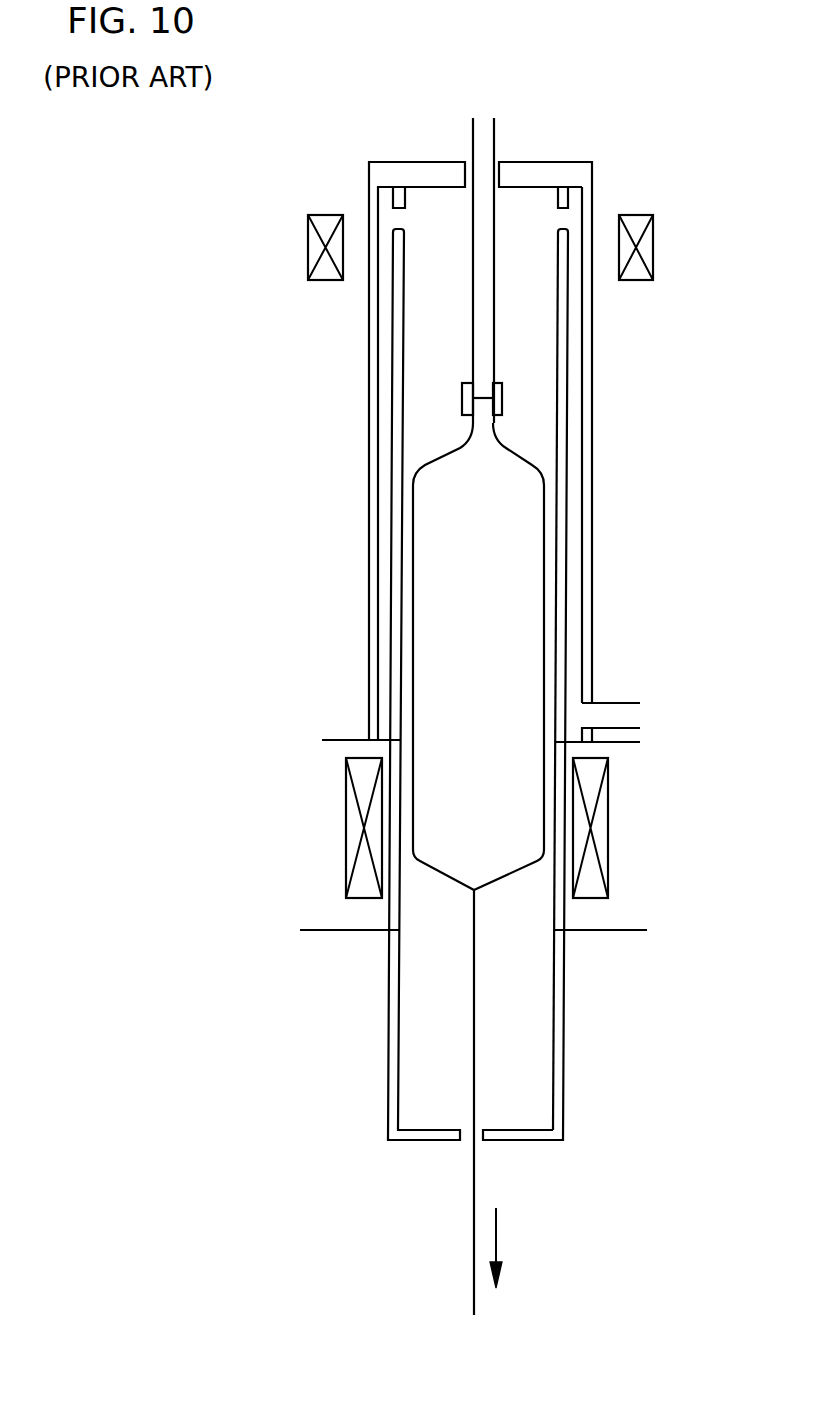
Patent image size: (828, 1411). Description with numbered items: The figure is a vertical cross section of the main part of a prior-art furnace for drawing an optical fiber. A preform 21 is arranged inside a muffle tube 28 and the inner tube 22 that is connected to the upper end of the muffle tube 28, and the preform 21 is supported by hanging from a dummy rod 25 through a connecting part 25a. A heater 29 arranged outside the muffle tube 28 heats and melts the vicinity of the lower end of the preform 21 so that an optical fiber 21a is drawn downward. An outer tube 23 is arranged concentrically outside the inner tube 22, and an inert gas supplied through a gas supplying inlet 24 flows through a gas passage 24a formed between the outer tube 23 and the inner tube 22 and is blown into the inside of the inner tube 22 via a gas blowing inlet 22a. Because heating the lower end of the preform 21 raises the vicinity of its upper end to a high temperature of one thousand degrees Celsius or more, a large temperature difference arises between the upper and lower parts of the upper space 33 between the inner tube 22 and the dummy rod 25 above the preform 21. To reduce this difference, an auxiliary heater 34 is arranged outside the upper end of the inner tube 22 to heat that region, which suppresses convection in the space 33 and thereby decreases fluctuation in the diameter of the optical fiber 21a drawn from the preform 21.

The preform 21 is at (523, 660).
The optical fiber 21a is at (472, 1177).
The inner tube 22 is at (557, 397).
The gas blowing inlet 22a is at (568, 217).
The outer tube 23 is at (587, 457).
The gas supplying inlet 24 is at (598, 717).
The gas passage 24a is at (573, 558).
The dummy rod 25 is at (483, 283).
The connecting part 25a is at (465, 402).
The muffle tube 28 is at (555, 870).
The heater 29 is at (603, 840).
The upper space above the preform 33 is at (547, 343).
The auxiliary heater 34 is at (653, 247).